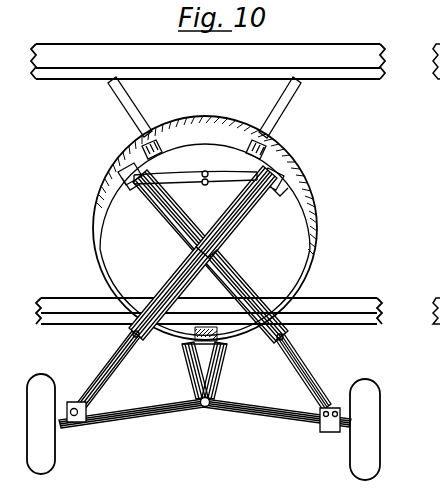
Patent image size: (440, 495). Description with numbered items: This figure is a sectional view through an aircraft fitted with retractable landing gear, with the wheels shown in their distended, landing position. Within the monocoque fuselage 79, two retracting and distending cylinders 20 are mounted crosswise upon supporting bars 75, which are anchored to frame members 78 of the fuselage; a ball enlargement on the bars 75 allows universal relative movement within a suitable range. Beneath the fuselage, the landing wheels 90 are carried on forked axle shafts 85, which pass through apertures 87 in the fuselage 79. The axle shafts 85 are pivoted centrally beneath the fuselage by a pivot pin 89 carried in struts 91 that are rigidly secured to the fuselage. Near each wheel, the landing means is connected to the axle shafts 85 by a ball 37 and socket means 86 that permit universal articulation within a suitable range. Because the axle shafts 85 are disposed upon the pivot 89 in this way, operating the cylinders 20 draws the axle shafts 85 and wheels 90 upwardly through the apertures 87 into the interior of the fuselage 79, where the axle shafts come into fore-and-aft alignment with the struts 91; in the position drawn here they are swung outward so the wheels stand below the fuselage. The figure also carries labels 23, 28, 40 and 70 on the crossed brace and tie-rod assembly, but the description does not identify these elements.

The retracting and distending cylinders 20 is at (166, 214).
The lower brace strut 23 is at (172, 274).
The landing gear strut 28 is at (110, 358).
The ball 37 is at (68, 400).
The tie rod 40 is at (198, 174).
The turnbuckle 70 is at (205, 186).
The supporting bars 75 is at (160, 156).
The frame members 78 is at (126, 186).
The monocoque fuselage 79 is at (312, 192).
The forked axle shafts 85 is at (162, 418).
The socket means 86 is at (88, 408).
The apertures 87 is at (314, 276).
The pivot pin 89 is at (205, 407).
The landing wheels 90 is at (48, 458).
The struts 91 is at (188, 370).